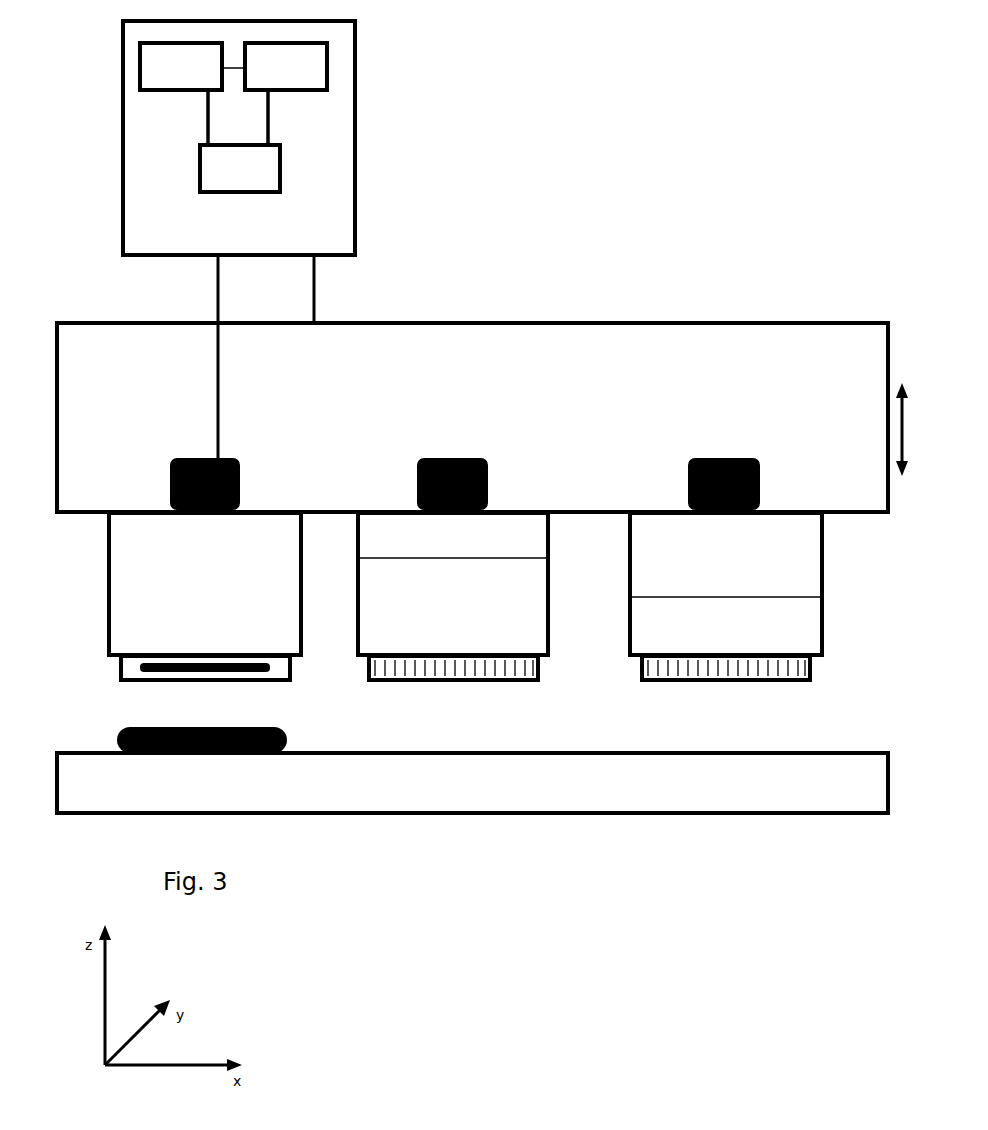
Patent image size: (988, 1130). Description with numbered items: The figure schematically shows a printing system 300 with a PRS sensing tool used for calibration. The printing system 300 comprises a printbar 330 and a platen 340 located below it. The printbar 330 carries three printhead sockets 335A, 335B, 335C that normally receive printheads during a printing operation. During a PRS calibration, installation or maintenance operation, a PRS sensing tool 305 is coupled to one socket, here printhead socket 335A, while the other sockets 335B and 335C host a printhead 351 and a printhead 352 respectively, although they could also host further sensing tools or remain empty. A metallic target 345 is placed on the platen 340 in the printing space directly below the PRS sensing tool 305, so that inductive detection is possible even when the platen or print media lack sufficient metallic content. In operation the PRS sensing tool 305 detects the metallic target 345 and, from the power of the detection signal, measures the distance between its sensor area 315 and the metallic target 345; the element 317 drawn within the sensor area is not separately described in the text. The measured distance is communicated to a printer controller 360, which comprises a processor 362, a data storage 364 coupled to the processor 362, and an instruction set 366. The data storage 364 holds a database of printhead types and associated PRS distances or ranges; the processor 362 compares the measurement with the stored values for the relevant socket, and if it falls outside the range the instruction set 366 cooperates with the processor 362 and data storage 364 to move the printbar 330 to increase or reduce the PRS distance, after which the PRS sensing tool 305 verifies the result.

The printing system 300 is at (716, 183).
The PRS sensing tool 305 is at (92, 608).
The sensor area 315 is at (117, 672).
The nozzle array 317 is at (287, 673).
The printbar 330 is at (428, 322).
The printhead socket 335A is at (238, 458).
The printhead socket 335B is at (488, 460).
The printhead socket 335C is at (760, 460).
The platen 340 is at (677, 814).
The metallic target 345 is at (117, 728).
The printhead 351 is at (578, 628).
The printhead 352 is at (842, 632).
The printer controller 360 is at (356, 107).
The processor 362 is at (200, 92).
The data storage 364 is at (325, 92).
The instruction set 366 is at (257, 192).